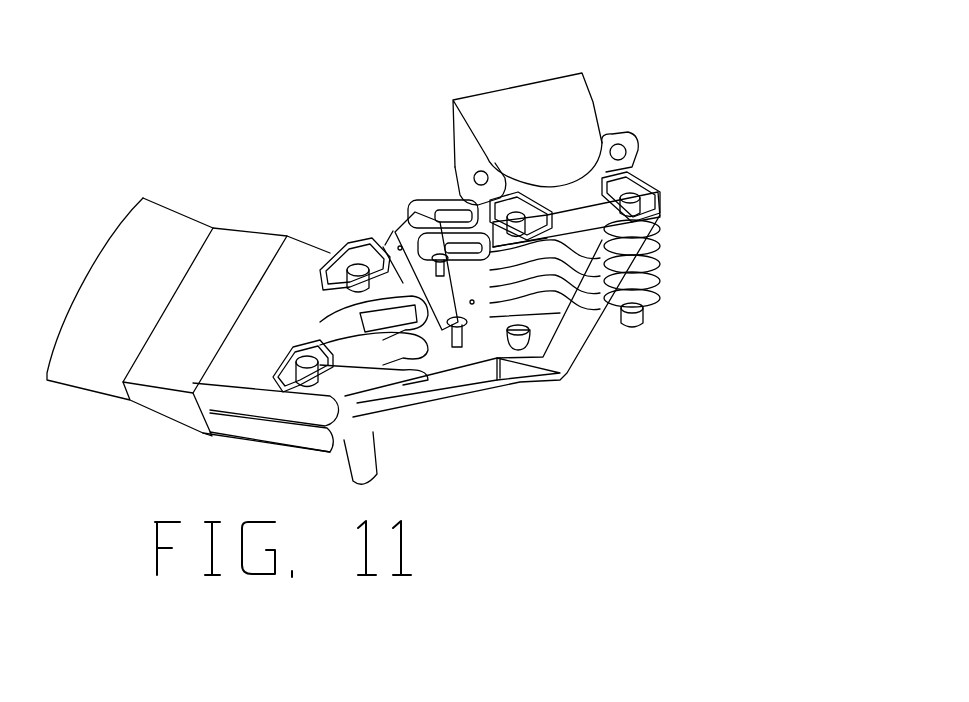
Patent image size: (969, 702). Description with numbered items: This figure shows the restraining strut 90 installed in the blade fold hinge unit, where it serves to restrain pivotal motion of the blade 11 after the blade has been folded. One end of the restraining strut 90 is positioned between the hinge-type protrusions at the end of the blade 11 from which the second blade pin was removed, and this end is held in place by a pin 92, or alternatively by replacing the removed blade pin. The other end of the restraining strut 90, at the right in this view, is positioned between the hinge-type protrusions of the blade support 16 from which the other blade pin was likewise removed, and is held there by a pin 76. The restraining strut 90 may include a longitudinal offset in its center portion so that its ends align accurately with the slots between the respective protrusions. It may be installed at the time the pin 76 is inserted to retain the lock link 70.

The blade 11 is at (180, 212).
The blade support 16 is at (592, 102).
The lock link 70 is at (577, 217).
The pin 76 is at (637, 325).
The restraining strut 90 is at (563, 378).
The pin 92 is at (372, 477).